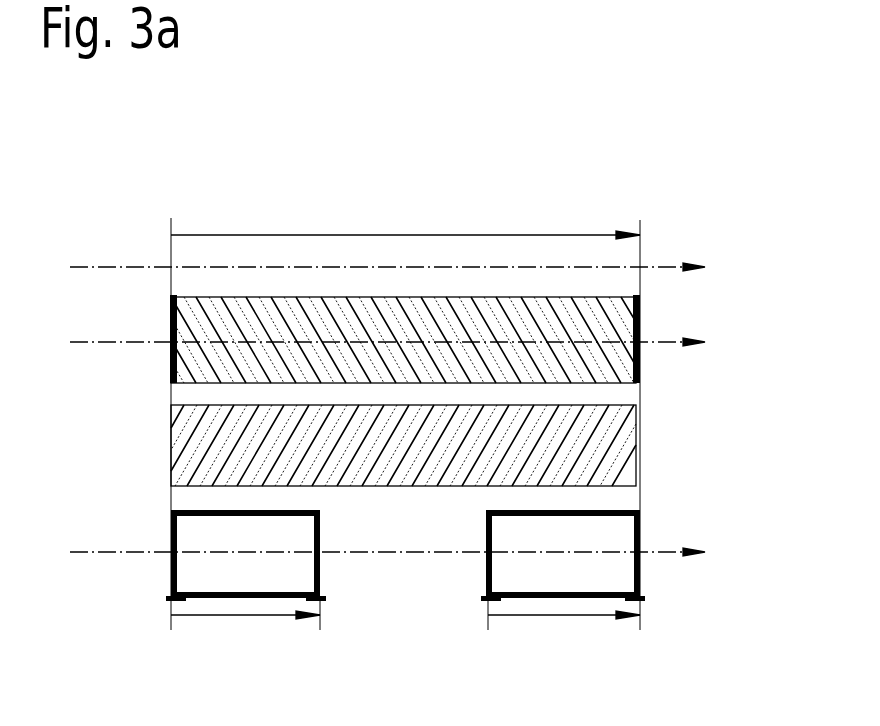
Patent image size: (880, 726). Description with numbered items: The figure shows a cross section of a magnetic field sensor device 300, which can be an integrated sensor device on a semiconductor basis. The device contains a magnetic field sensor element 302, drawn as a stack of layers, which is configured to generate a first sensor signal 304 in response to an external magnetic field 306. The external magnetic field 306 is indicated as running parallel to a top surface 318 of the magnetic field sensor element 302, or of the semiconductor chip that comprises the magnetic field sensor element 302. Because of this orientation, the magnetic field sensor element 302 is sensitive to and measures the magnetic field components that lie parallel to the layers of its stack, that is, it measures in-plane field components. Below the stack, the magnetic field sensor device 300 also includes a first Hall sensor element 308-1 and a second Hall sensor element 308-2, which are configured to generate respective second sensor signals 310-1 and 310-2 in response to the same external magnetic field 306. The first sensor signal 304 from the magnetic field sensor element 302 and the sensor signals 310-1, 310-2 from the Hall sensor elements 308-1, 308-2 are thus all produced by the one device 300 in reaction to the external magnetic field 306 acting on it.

The magnetic field sensor device 300 is at (604, 138).
The magnetic field sensor element 302 is at (437, 319).
The first sensor signal 304 is at (467, 235).
The external magnetic field 306 is at (103, 266).
The first Hall sensor element 308-1 is at (185, 576).
The second Hall sensor element 308-2 is at (622, 577).
The sensor signal 310-1 is at (240, 615).
The sensor signal 310-2 is at (558, 615).
The top surface 318 is at (313, 297).